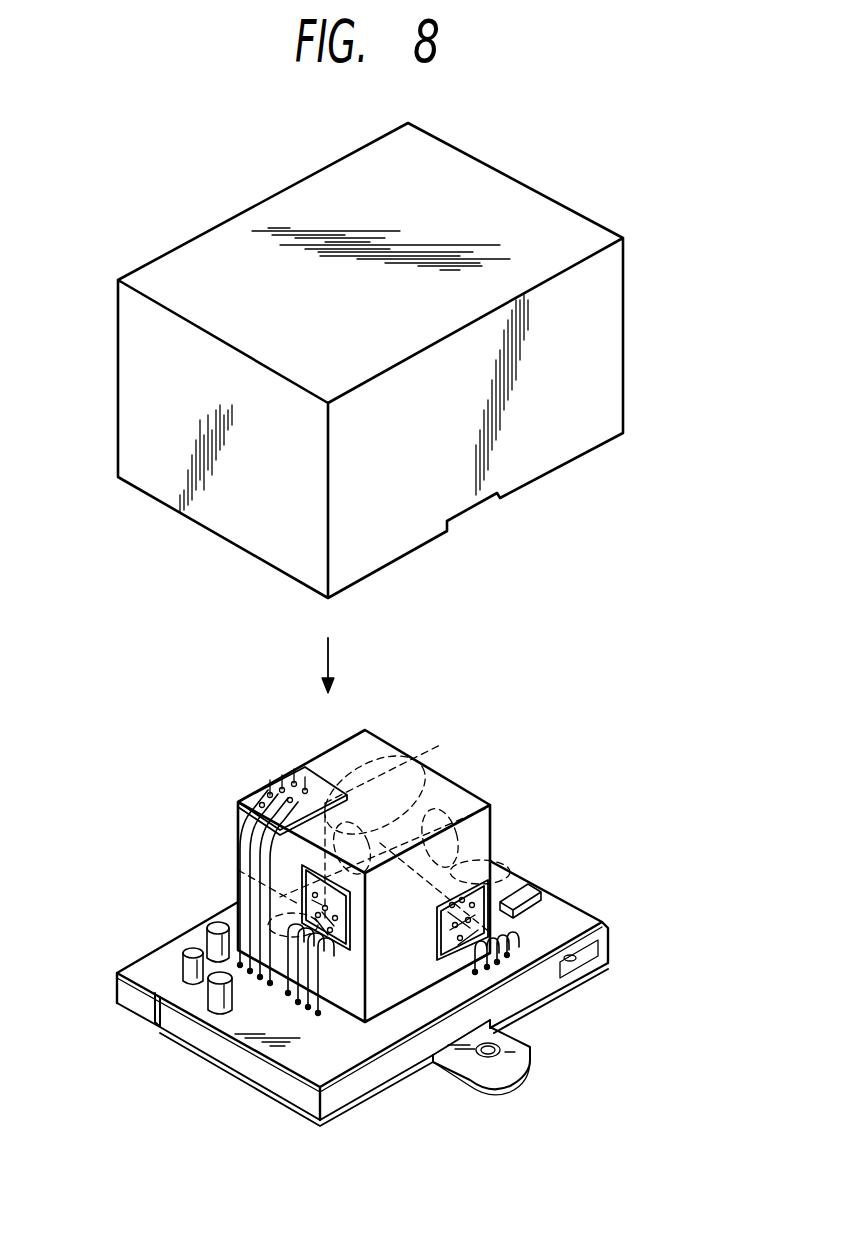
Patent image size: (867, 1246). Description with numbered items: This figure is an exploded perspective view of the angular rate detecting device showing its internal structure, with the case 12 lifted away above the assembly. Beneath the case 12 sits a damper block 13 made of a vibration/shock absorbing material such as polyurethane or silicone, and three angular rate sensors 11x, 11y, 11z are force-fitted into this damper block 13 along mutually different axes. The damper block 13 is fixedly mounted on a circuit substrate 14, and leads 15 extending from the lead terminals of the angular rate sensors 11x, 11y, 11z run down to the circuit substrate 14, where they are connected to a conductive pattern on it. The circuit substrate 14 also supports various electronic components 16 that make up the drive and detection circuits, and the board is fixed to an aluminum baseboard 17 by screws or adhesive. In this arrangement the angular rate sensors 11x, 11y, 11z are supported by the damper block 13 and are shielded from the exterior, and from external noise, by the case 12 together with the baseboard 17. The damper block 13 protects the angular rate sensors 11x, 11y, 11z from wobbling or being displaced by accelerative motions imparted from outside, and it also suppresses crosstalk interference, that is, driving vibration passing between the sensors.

The case 12 is at (623, 368).
The damper block 13 is at (448, 785).
The circuit substrate 14 is at (585, 920).
The leads 15 is at (240, 845).
The electronic components 16 is at (207, 998).
The baseboard 17 is at (320, 1105).
The angular rate sensor 11x is at (490, 812).
The angular rate sensor 11y is at (490, 862).
The angular rate sensor 11z is at (410, 757).